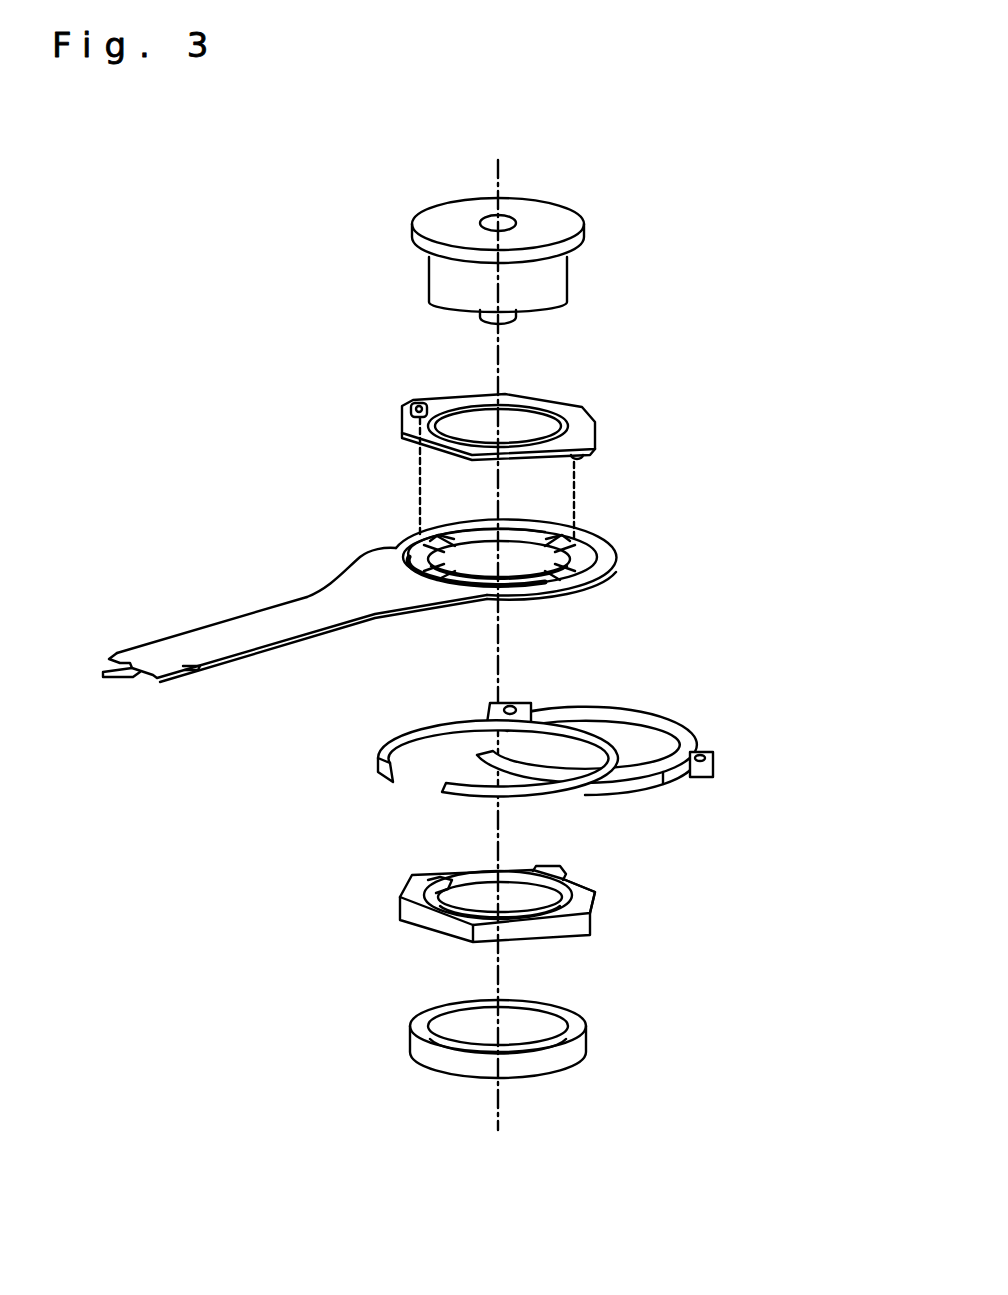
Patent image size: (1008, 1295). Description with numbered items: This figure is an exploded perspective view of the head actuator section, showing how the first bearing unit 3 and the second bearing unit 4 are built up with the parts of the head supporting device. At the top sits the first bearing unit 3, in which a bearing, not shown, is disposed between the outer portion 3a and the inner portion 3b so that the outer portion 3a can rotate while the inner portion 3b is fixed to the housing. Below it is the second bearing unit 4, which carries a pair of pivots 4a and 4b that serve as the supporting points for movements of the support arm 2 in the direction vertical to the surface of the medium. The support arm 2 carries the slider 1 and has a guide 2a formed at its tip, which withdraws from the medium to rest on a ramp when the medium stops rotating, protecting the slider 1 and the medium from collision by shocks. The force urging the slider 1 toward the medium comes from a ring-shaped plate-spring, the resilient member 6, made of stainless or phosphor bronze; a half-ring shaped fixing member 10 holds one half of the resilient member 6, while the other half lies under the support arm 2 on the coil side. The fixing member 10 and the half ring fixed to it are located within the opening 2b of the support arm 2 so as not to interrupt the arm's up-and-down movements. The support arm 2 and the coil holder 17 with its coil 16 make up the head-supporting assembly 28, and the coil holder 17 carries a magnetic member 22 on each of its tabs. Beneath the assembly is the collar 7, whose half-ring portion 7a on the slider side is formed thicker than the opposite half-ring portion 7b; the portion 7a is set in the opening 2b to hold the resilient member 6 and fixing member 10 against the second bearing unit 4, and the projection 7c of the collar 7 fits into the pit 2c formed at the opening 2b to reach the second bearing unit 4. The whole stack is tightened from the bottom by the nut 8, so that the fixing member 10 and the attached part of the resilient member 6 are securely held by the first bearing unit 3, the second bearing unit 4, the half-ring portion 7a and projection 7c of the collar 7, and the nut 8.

The slider 1 is at (187, 672).
The support arm 2 is at (516, 563).
The guide 2a is at (110, 680).
The opening 2b is at (410, 542).
The pit 2c is at (577, 536).
The first bearing unit 3 is at (552, 214).
The outer portion 3a is at (572, 276).
The inner portion 3b is at (520, 318).
The second bearing unit 4 is at (582, 420).
The pivot 4a is at (582, 457).
The pivot 4b is at (410, 404).
The resilient member 6 is at (447, 527).
The collar 7 is at (494, 902).
The half-ring portion 7a is at (416, 890).
The half-ring portion 7b is at (598, 906).
The projection 7c is at (558, 870).
The nut 8 is at (576, 1024).
The fixing member 10 is at (392, 553).
The coil 16 is at (683, 743).
The coil holder 17 is at (626, 741).
The magnetic member 22 is at (512, 705).
The head-supporting assembly 28 is at (615, 730).